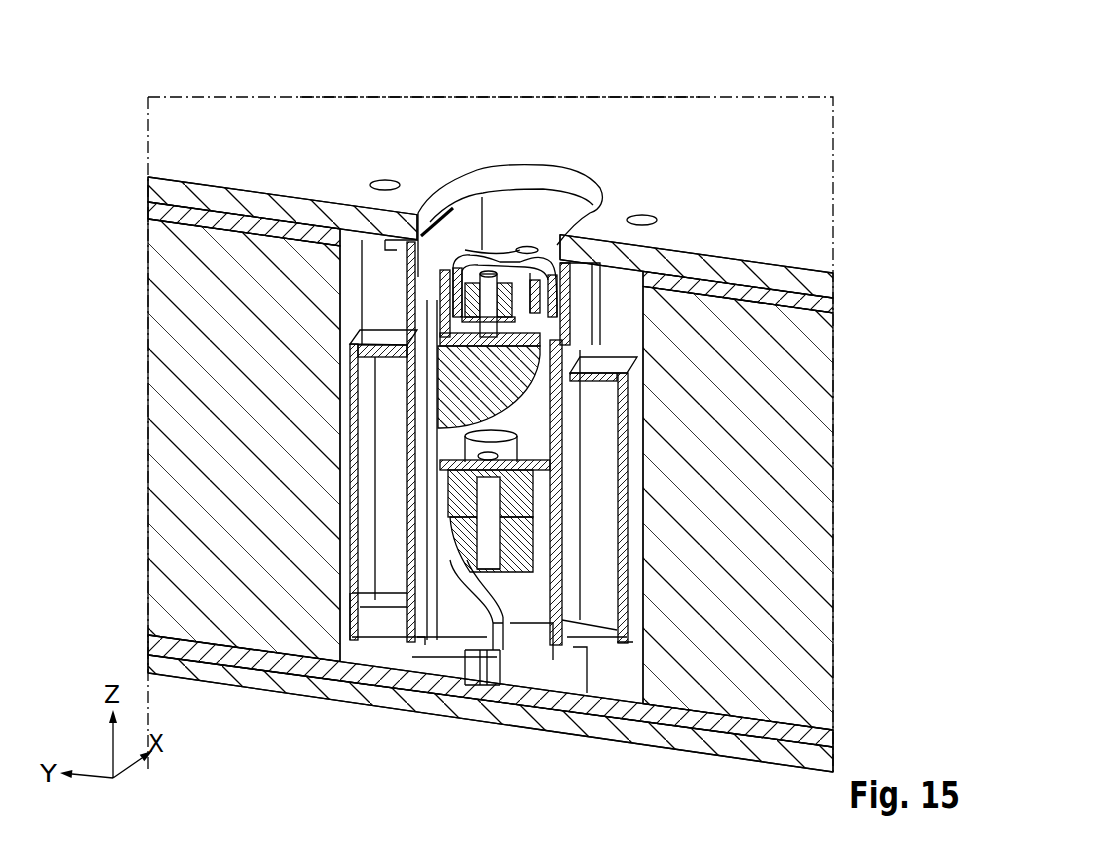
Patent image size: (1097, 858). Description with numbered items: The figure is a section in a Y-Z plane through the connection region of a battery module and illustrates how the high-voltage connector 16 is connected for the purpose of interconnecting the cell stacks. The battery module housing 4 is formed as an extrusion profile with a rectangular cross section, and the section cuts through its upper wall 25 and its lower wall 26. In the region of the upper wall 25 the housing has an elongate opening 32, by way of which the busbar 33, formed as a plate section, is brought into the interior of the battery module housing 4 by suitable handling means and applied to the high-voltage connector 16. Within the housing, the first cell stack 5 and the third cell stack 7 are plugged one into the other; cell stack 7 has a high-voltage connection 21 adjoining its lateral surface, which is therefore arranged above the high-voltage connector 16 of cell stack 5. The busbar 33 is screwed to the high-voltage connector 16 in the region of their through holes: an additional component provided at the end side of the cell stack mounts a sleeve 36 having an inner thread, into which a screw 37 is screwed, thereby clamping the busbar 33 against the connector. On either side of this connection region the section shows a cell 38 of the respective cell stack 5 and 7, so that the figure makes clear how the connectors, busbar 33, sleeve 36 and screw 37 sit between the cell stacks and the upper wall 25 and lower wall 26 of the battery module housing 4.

The battery module housing 4 is at (810, 145).
The first cell stack 5 is at (808, 518).
The third cell stack 7 is at (165, 528).
The high-voltage connector 16 is at (527, 510).
The high-voltage connection 21 is at (553, 288).
The upper wall 25 is at (713, 117).
The lower wall 26 is at (270, 688).
The opening 32 is at (516, 166).
The busbar 33 is at (533, 492).
The sleeve 36 is at (507, 552).
The screw 37 is at (543, 262).
The cell 38 is at (173, 567).